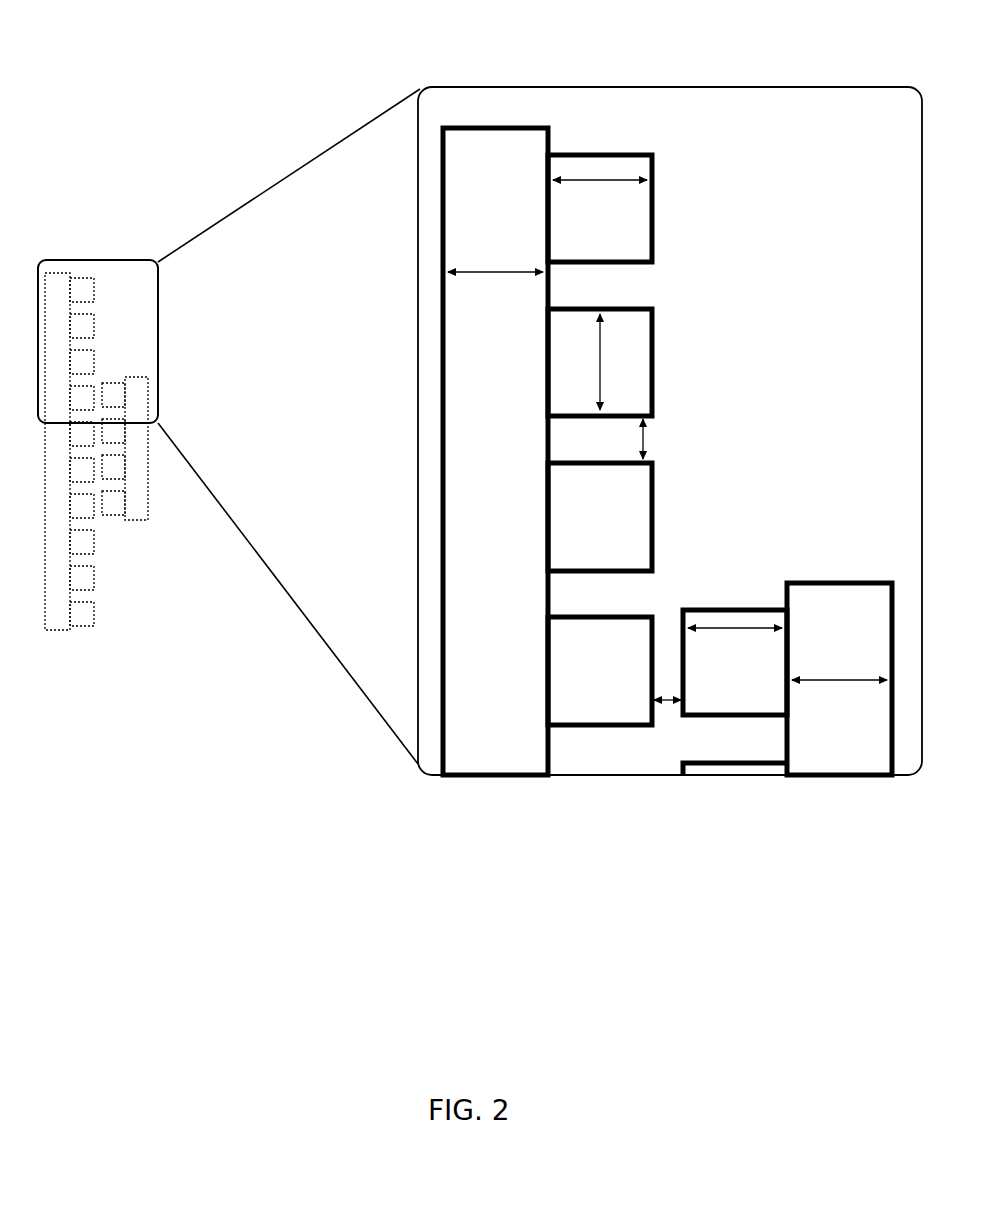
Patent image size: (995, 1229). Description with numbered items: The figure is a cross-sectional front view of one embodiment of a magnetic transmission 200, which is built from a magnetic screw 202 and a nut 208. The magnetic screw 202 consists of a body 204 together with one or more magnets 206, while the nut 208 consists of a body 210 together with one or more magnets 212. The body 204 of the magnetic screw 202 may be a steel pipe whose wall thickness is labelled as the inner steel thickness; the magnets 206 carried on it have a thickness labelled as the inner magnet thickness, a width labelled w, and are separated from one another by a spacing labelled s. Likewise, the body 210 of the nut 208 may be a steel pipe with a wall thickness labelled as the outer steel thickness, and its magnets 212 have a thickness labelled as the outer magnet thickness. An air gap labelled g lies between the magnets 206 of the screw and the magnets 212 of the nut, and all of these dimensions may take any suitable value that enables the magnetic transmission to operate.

The magnetic transmission 200 is at (139, 58).
The magnetic screw 202 is at (548, 50).
The body 204 is at (56, 310).
The magnets 206 is at (84, 609).
The nut 208 is at (796, 846).
The body 210 is at (131, 479).
The magnets 212 is at (112, 505).